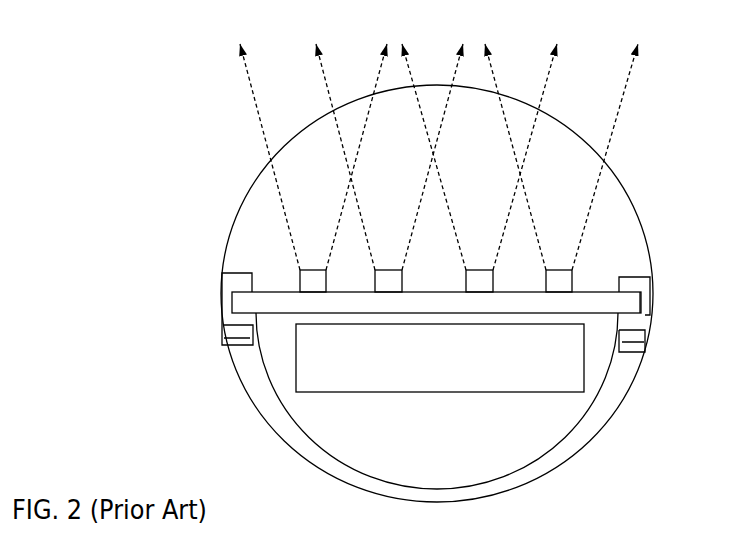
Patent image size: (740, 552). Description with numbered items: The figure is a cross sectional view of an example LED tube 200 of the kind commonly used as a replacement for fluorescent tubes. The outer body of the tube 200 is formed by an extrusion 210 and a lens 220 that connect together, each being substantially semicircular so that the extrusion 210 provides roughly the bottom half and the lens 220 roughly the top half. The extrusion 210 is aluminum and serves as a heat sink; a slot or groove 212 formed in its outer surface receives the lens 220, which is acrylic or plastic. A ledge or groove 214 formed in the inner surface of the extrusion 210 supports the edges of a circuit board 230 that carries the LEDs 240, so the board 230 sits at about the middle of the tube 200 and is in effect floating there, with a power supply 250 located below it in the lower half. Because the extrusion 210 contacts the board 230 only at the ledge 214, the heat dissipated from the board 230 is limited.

The LED tube 200 is at (187, 177).
The extrusion 210 is at (597, 420).
The slot or groove 212 is at (638, 347).
The ledge, groove 214 is at (641, 293).
The lens 220 is at (634, 213).
The circuit board 230 is at (278, 303).
The LEDs 240 is at (327, 279).
The power supply 250 is at (440, 358).